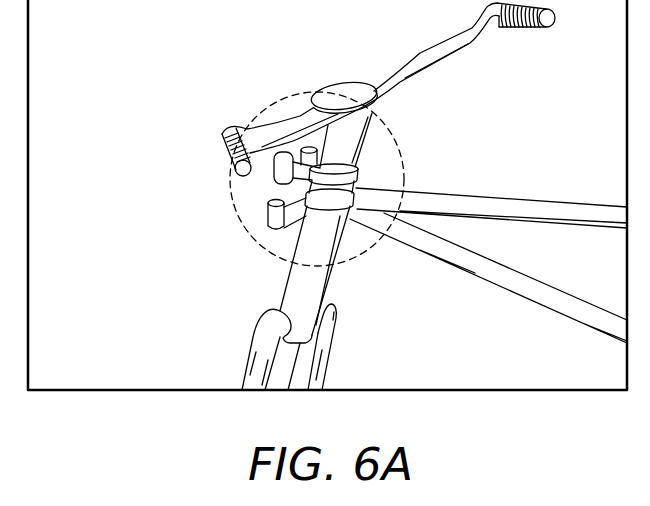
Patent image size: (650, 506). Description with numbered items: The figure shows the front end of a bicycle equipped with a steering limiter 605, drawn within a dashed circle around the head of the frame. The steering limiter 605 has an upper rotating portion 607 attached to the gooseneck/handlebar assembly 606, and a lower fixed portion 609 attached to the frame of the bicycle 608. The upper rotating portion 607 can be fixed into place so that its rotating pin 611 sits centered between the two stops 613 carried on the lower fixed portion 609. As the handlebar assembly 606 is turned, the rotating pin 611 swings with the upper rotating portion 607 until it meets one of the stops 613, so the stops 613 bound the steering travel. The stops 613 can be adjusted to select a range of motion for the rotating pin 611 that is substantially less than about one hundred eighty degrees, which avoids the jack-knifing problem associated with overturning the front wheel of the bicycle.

The steering limiter 605 is at (404, 160).
The gooseneck/handlebar assembly 606 is at (426, 54).
The upper rotating portion 607 is at (333, 185).
The frame of the bicycle 608 is at (318, 253).
The lower fixed portion 609 is at (302, 245).
The rotating pin 611 is at (288, 163).
The stops 613 is at (266, 210).